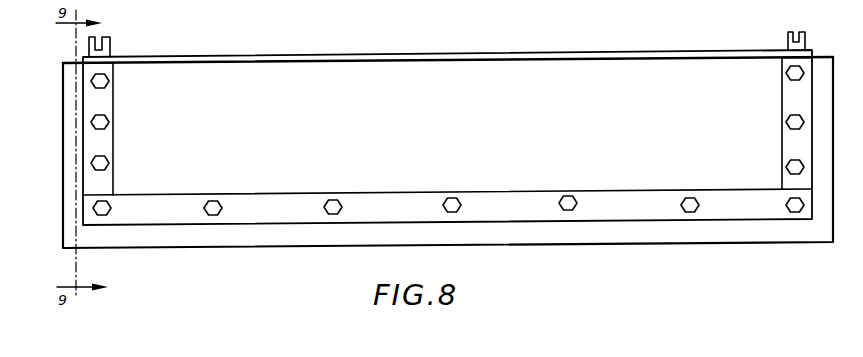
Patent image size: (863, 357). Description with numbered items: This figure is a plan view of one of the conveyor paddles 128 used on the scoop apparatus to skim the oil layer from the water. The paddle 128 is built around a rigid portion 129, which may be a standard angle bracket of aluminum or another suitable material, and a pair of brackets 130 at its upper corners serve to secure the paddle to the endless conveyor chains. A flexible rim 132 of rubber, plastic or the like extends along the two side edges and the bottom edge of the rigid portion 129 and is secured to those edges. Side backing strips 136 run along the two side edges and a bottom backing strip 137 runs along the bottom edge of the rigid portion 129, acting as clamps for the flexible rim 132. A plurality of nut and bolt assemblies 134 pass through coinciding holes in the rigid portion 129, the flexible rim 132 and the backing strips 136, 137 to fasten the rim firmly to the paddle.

The paddle 128 is at (418, 62).
The rigid portion 129 is at (615, 55).
The bracket 130 is at (110, 44).
The flexible rim 132 is at (297, 235).
The nut and bolt assembly 134 is at (102, 163).
The side backing strip 136 is at (100, 140).
The bottom backing strip 137 is at (493, 205).